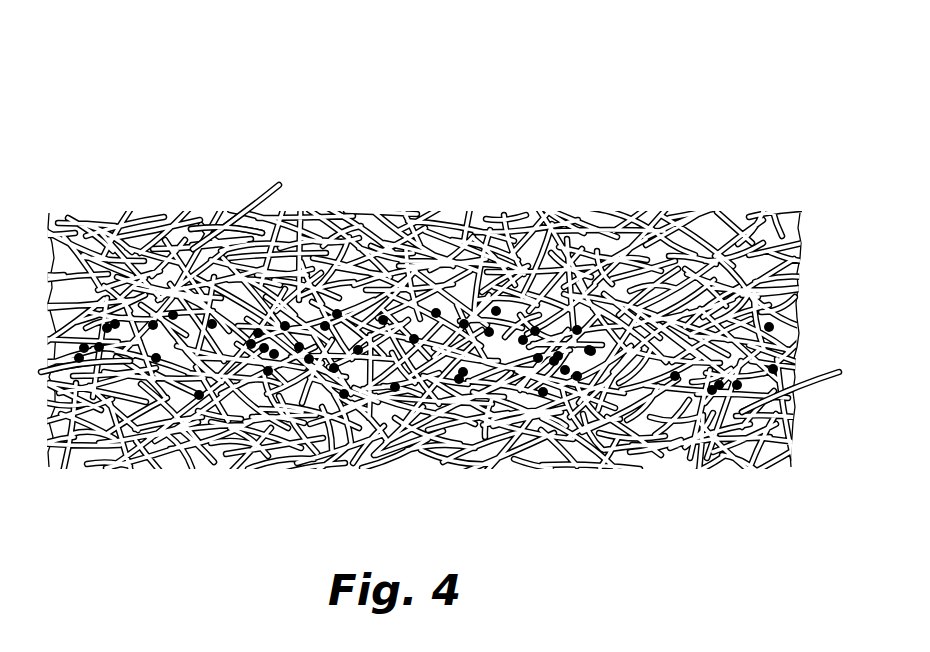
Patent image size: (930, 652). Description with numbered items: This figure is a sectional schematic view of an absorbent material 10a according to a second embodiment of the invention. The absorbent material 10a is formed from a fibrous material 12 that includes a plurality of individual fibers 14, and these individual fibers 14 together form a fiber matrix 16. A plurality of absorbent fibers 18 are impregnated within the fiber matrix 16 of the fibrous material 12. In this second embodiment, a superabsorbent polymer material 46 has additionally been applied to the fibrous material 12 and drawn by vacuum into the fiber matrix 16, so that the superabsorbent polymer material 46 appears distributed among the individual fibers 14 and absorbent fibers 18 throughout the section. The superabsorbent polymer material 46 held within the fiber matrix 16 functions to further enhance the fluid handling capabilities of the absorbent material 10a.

The absorbent material 10a is at (228, 77).
The fibrous material 12 is at (34, 248).
The individual fibers 14 is at (368, 213).
The fiber matrix 16 is at (238, 207).
The absorbent fibers 18 is at (62, 372).
The superabsorbent polymer material 46 is at (58, 329).